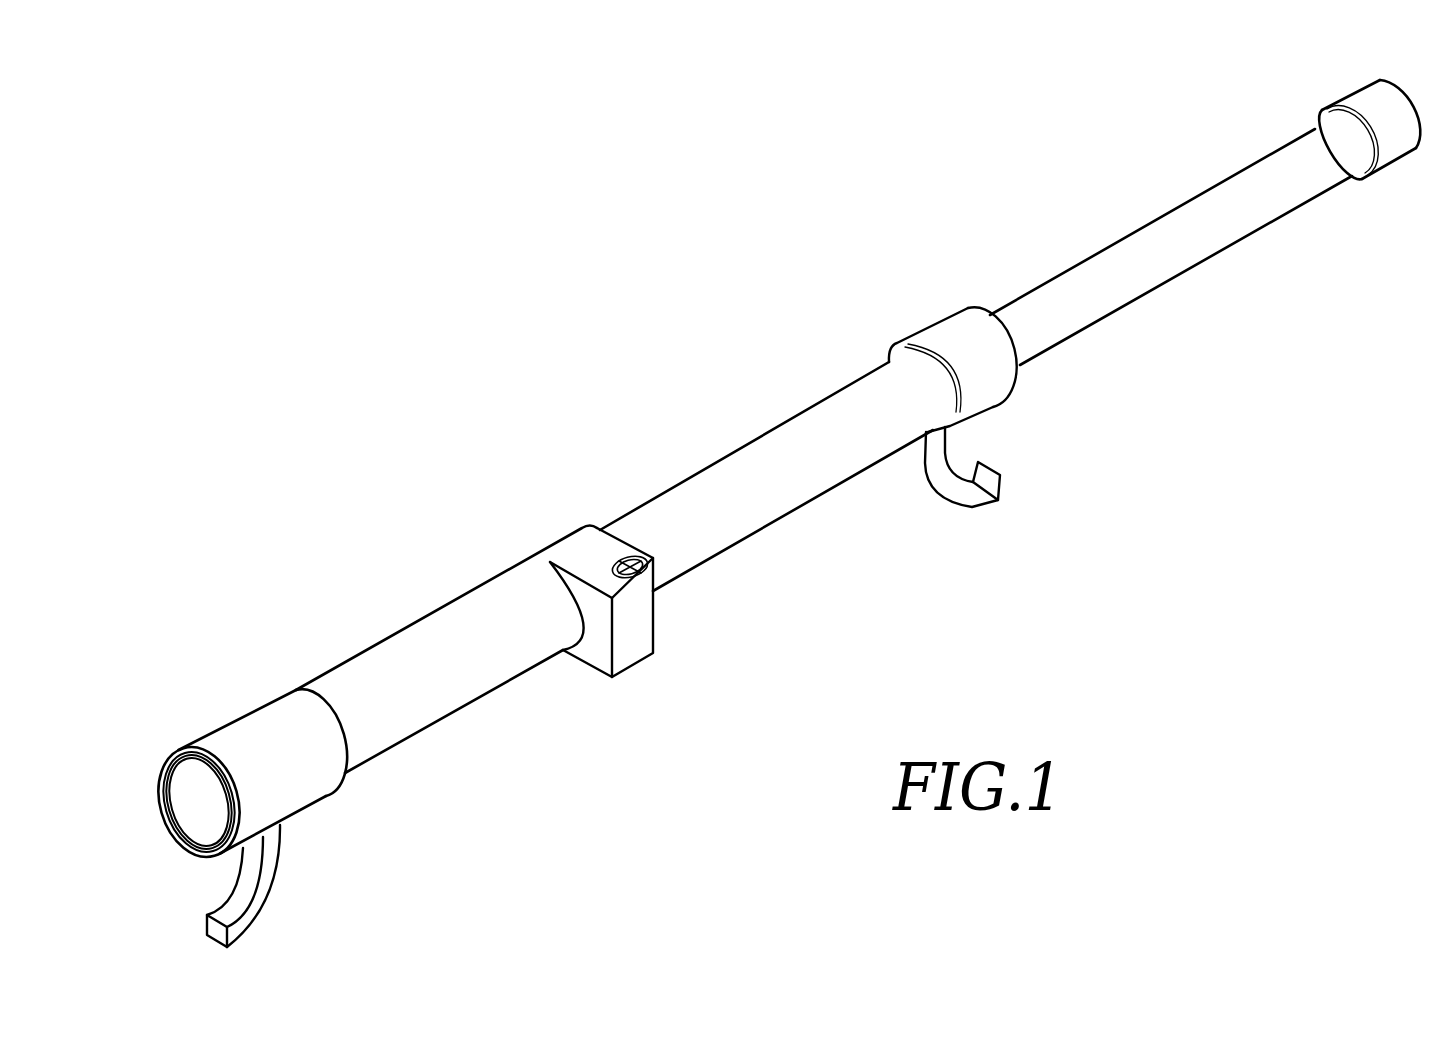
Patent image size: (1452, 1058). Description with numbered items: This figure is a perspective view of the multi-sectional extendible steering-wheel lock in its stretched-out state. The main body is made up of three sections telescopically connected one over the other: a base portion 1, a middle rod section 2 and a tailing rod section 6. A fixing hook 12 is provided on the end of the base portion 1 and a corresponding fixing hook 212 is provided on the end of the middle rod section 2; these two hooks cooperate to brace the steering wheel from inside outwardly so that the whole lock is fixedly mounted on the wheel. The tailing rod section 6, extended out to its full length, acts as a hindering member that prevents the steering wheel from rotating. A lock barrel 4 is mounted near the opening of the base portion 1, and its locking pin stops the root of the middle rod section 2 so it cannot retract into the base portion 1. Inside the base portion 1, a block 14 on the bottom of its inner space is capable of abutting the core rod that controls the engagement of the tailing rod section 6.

The base portion 1 is at (423, 708).
The block 14 is at (195, 808).
The fixing hook 12 is at (272, 874).
The lock barrel 4 is at (650, 562).
The middle rod section 2 is at (835, 423).
The fixing hook 212 is at (935, 475).
The tailing rod section 6 is at (1085, 268).